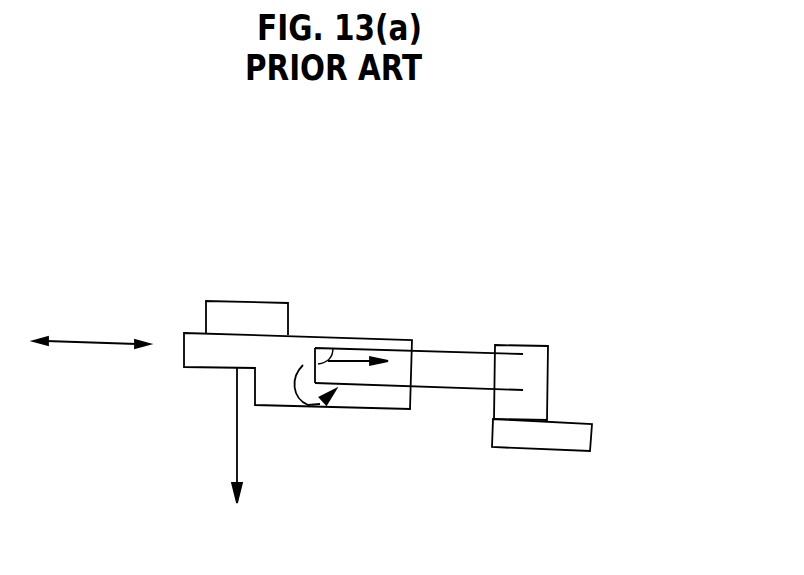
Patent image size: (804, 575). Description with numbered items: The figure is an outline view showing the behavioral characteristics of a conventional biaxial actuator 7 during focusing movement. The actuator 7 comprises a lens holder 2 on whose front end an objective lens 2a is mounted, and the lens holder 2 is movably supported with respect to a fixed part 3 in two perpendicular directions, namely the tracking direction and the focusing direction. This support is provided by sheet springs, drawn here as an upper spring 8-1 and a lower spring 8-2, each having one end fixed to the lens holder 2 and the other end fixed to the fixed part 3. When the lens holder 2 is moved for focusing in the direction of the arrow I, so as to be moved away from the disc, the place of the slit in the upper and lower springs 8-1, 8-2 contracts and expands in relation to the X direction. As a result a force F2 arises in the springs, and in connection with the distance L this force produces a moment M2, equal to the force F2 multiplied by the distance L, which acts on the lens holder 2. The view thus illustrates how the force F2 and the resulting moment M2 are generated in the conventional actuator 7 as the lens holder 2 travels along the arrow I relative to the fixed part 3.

The lens holder 2 is at (296, 357).
The objective lens 2a is at (225, 317).
The fixed part 3 is at (532, 370).
The biaxial actuator 7 is at (528, 250).
The upper spring 8-1 is at (447, 352).
The lower spring 8-2 is at (448, 390).
The distance L is at (333, 348).
The force F2 is at (358, 361).
The moment M2 is at (308, 402).
The X direction X is at (91, 342).
The arrow I is at (233, 448).